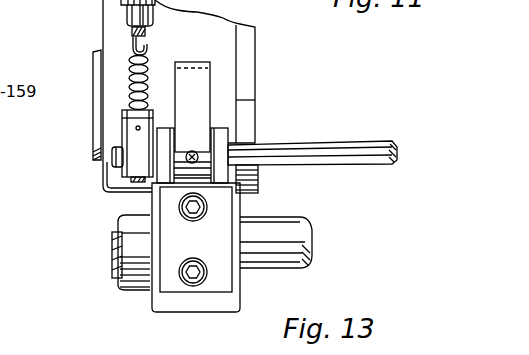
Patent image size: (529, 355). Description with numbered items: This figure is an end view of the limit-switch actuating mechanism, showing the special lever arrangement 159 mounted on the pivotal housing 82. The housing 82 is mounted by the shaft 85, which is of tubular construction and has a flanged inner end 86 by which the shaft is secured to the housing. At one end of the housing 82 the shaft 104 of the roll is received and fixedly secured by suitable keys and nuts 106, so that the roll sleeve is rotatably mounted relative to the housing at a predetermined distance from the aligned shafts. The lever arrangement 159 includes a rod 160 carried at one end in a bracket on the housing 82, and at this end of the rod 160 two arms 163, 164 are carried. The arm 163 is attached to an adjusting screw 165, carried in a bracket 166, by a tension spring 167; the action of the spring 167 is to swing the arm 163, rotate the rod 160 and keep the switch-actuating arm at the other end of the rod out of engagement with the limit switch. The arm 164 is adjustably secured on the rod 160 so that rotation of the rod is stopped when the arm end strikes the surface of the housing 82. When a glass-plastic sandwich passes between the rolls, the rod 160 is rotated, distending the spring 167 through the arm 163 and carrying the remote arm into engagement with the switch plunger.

The housing 82 is at (112, 177).
The shaft 85 is at (97, 88).
The flanged inner end 86 is at (242, 48).
The shaft 104 is at (267, 235).
The nuts 106 is at (132, 242).
The lever arrangement 159 is at (338, 136).
The rod 160 is at (273, 153).
The arm 163 is at (122, 131).
The arm 164 is at (191, 88).
The adjusting screw 165 is at (131, 33).
The bracket 166 is at (121, 11).
The tension spring 167 is at (130, 67).